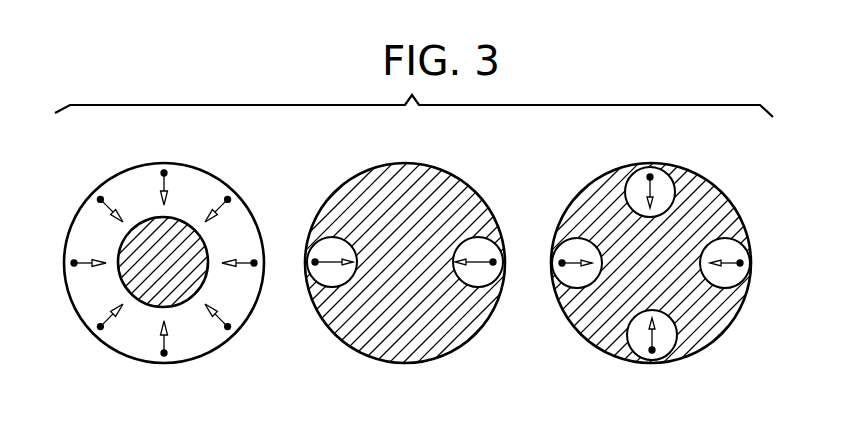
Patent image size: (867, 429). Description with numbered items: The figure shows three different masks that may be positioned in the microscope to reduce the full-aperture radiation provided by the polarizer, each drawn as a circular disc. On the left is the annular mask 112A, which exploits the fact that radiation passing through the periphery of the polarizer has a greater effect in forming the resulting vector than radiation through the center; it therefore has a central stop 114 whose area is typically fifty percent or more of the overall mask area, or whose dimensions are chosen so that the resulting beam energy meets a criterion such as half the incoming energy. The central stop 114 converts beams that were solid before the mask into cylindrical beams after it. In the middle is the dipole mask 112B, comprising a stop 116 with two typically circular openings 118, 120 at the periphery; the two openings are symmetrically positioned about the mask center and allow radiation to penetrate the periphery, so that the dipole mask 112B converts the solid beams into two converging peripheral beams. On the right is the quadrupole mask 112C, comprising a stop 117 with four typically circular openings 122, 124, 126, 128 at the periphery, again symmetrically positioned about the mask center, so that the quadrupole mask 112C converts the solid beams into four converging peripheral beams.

The annular mask 112A is at (165, 163).
The central stop 114 is at (145, 220).
The dipole mask 112B is at (405, 163).
The stop 116 is at (470, 181).
The opening 118 is at (450, 248).
The opening 120 is at (362, 229).
The quadrupole mask 112C is at (648, 163).
The stop 117 is at (725, 188).
The opening 122 is at (627, 185).
The opening 124 is at (733, 290).
The opening 126 is at (678, 342).
The opening 128 is at (570, 237).